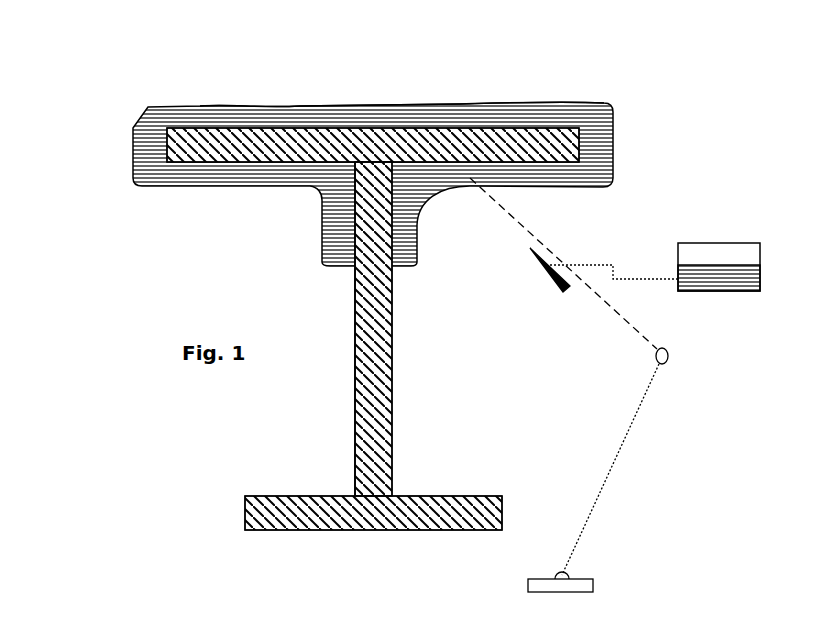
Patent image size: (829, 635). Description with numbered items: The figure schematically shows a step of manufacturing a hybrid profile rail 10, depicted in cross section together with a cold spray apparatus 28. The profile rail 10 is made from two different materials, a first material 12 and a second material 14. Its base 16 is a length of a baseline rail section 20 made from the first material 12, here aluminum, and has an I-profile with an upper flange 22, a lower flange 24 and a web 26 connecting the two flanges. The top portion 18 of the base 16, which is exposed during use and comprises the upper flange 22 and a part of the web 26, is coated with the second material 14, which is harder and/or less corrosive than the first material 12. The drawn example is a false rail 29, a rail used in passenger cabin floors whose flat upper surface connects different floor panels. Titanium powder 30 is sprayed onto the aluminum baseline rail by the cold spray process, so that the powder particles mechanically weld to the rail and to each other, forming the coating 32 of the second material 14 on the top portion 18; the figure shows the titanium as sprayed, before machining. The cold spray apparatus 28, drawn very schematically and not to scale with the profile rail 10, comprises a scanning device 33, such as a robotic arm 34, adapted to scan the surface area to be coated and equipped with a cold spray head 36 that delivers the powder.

The profile rail 10 is at (98, 233).
The first material 12 is at (357, 432).
The second material 14 is at (603, 103).
The base 16 is at (350, 379).
The top portion 18 is at (224, 113).
The baseline rail section 20 is at (412, 402).
The upper flange 22 is at (305, 127).
The lower flange 24 is at (420, 531).
The web 26 is at (393, 330).
The cold spray apparatus 28 is at (714, 212).
The false rail 29 is at (98, 118).
The titanium powder 30 is at (505, 223).
The coating 32 is at (475, 103).
The scanning device 33 is at (646, 459).
The robotic arm 34 is at (646, 400).
The cold spray head 36 is at (543, 275).